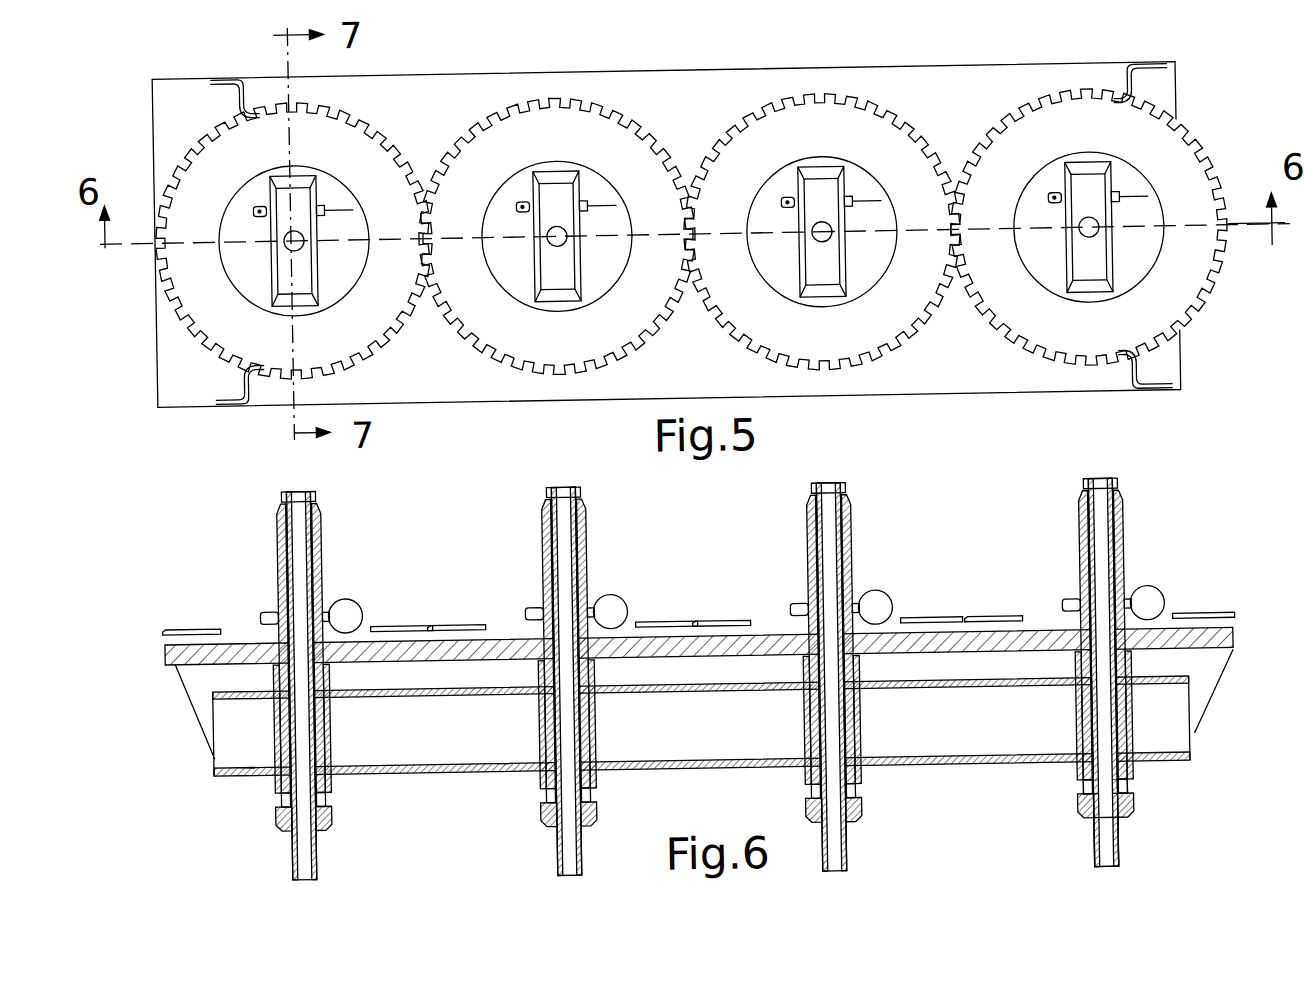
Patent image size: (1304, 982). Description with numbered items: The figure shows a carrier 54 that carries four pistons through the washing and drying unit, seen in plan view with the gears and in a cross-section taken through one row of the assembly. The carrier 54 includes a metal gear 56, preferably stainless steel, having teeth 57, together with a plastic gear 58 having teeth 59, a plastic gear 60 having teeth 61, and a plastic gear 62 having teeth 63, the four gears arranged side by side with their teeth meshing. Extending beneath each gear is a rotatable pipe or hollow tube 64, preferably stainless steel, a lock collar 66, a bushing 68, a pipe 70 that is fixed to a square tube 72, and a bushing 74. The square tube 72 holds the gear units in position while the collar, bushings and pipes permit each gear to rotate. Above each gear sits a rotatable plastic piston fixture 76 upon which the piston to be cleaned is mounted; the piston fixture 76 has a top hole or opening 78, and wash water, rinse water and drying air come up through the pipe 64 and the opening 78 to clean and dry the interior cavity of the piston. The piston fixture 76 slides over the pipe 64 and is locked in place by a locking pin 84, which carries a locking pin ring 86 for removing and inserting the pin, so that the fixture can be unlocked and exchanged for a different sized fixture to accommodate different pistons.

In FIG. 5, the carrier 54 is at (1188, 388).
In FIG. 5, the metal gear 56 is at (1111, 191).
In FIG. 6, the metal gear 56 is at (1236, 650).
In FIG. 5, the teeth 57 is at (1080, 98).
In FIG. 5, the plastic gear 58 is at (827, 186).
In FIG. 6, the plastic gear 58 is at (900, 634).
In FIG. 5, the teeth 59 is at (831, 100).
In FIG. 5, the plastic gear 60 is at (577, 193).
In FIG. 6, the plastic gear 60 is at (638, 634).
In FIG. 5, the teeth 61 is at (578, 102).
In FIG. 5, the plastic gear 62 is at (300, 199).
In FIG. 6, the plastic gear 62 is at (368, 636).
In FIG. 5, the teeth 63 is at (353, 171).
In FIG. 6, the rotatable pipe 64 is at (1116, 850).
In FIG. 6, the lock collar 66 is at (1132, 816).
In FIG. 6, the bushing 68 is at (1075, 798).
In FIG. 6, the pipe 70 is at (1075, 789).
In FIG. 6, the square tube 72 is at (897, 777).
In FIG. 6, the bushing 74 is at (1075, 667).
In FIG. 5, the piston fixture 76 is at (272, 279).
In FIG. 6, the piston fixture 76 is at (277, 518).
In FIG. 5, the top hole 78 is at (284, 245).
In FIG. 6, the top hole 78 is at (298, 497).
In FIG. 5, the locking pin 84 is at (258, 206).
In FIG. 6, the locking pin 84 is at (266, 614).
In FIG. 5, the locking pin ring 86 is at (339, 208).
In FIG. 6, the locking pin ring 86 is at (346, 602).